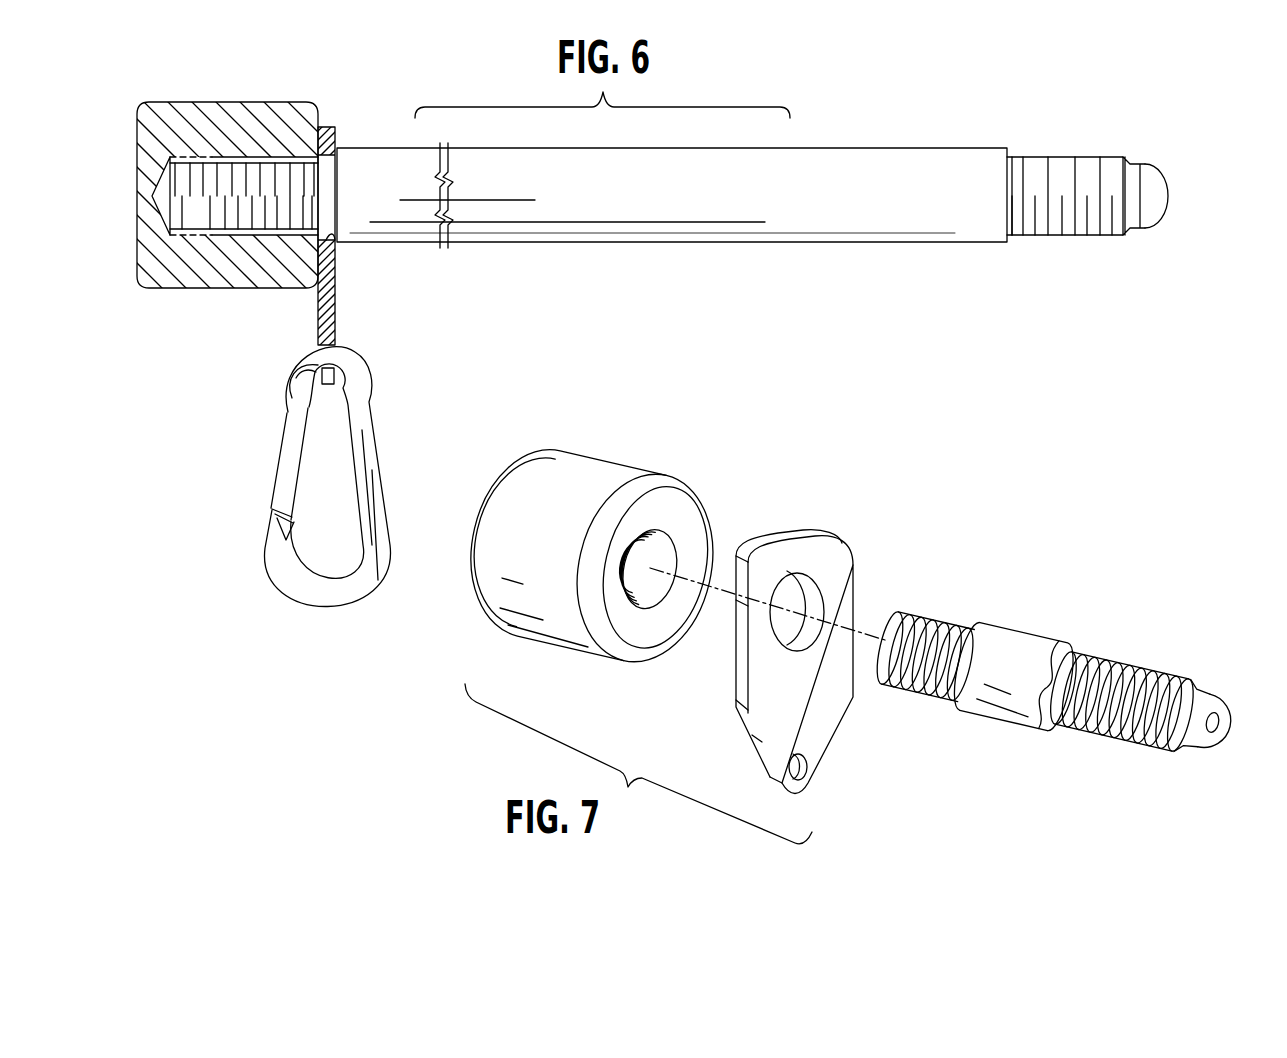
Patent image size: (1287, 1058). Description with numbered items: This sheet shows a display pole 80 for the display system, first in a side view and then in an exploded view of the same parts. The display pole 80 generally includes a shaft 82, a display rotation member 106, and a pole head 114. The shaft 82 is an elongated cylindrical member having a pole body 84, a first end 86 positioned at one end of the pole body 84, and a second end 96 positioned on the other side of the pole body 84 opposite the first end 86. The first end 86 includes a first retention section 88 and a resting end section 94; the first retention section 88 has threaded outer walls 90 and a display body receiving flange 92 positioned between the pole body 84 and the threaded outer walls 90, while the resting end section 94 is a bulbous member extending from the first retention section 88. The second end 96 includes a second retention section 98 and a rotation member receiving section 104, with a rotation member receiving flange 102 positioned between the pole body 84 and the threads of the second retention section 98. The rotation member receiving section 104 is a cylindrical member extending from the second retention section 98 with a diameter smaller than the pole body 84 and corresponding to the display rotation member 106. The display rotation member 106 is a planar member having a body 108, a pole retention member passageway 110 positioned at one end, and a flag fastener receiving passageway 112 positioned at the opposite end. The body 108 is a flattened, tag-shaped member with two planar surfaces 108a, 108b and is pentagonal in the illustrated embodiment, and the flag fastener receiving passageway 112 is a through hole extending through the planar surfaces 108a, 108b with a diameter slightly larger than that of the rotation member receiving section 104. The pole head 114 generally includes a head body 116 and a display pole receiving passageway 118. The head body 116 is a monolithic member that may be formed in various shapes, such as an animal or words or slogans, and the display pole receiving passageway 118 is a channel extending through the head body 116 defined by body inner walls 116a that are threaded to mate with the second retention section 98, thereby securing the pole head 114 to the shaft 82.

In FIG. 6, the display pole 80 is at (892, 148).
In FIG. 7, the display pole 80 is at (1047, 632).
In FIG. 6, the shaft 82 is at (880, 207).
In FIG. 7, the shaft 82 is at (1023, 664).
In FIG. 6, the pole body 84 is at (918, 244).
In FIG. 7, the pole body 84 is at (997, 710).
In FIG. 6, the first end 86 is at (1047, 112).
In FIG. 7, the first end 86 is at (1238, 763).
In FIG. 6, the first retention section 88 is at (1081, 142).
In FIG. 7, the first retention section 88 is at (1150, 667).
In FIG. 6, the threaded outer walls 90 is at (1105, 234).
In FIG. 7, the threaded outer walls 90 is at (1122, 737).
In FIG. 6, the display body receiving flange 92 is at (1011, 244).
In FIG. 7, the display body receiving flange 92 is at (1047, 684).
In FIG. 6, the resting end section 94 is at (1171, 203).
In FIG. 7, the resting end section 94 is at (1228, 718).
In FIG. 6, the second end 96 is at (327, 103).
In FIG. 7, the second end 96 is at (936, 570).
In FIG. 6, the second retention section 98 is at (337, 143).
In FIG. 7, the second retention section 98 is at (958, 610).
In FIG. 6, the rotation member receiving flange 102 is at (343, 142).
In FIG. 6, the rotation member receiving section 104 is at (336, 238).
In FIG. 6, the display rotation member 106 is at (323, 118).
In FIG. 7, the display rotation member 106 is at (818, 538).
In FIG. 7, the body 108 is at (854, 697).
In FIG. 7, the planar surface 108a is at (833, 702).
In FIG. 7, the planar surface 108b is at (735, 693).
In FIG. 7, the pole retention member passageway 110 is at (821, 590).
In FIG. 6, the flag fastener receiving passageway 112 is at (292, 367).
In FIG. 7, the flag fastener receiving passageway 112 is at (807, 770).
In FIG. 6, the pole head 114 is at (200, 102).
In FIG. 7, the pole head 114 is at (584, 458).
In FIG. 6, the head body 116 is at (137, 108).
In FIG. 7, the head body 116 is at (542, 541).
In FIG. 7, the body inner walls 116a is at (673, 553).
In FIG. 7, the display pole receiving passageway 118 is at (648, 565).